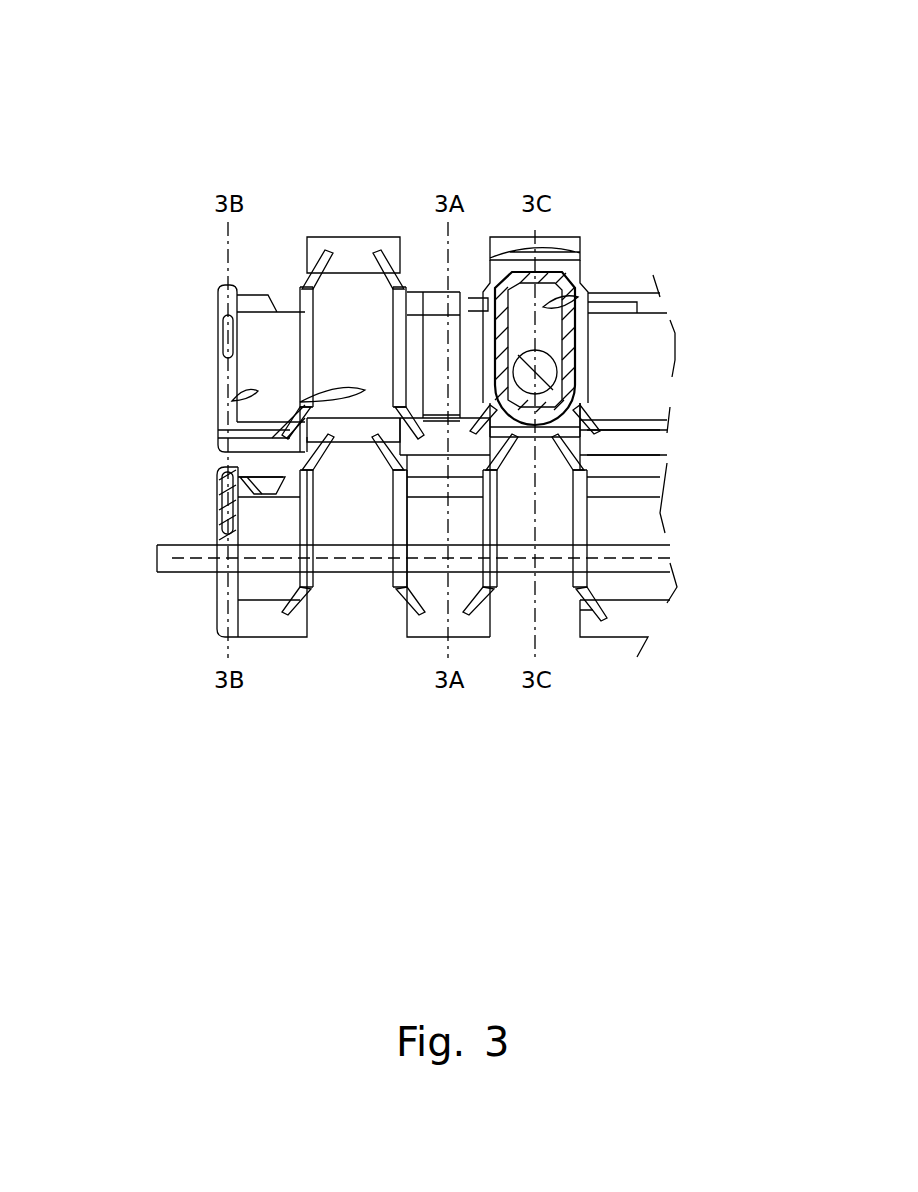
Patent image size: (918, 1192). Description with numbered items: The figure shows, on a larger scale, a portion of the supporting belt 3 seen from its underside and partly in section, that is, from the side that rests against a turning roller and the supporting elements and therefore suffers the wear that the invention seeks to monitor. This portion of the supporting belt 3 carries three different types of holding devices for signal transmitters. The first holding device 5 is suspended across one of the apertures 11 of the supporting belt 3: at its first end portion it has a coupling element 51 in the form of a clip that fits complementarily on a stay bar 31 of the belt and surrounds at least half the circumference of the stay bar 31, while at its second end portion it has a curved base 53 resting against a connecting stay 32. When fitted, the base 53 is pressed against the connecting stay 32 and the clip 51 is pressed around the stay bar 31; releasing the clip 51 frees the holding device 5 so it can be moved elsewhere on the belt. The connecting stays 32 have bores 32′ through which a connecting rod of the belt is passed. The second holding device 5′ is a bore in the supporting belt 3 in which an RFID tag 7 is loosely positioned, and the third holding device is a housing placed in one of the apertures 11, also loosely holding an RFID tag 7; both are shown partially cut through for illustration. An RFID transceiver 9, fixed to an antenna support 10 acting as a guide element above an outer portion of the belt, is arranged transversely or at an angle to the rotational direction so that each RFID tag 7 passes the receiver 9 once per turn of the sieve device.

The supporting belt 3 is at (205, 150).
The stay bar 31 is at (413, 272).
The coupling element 51 is at (426, 290).
The first holding device 5 is at (450, 343).
The curved base 53 is at (467, 415).
The second holding device 5′ is at (223, 292).
The RFID tag 7 is at (227, 337).
The aperture 11 is at (300, 402).
The bore 32′ is at (232, 440).
The connecting stay 32 is at (540, 500).
The RFID transceiver 9 is at (173, 557).
The antenna support 10 is at (177, 572).